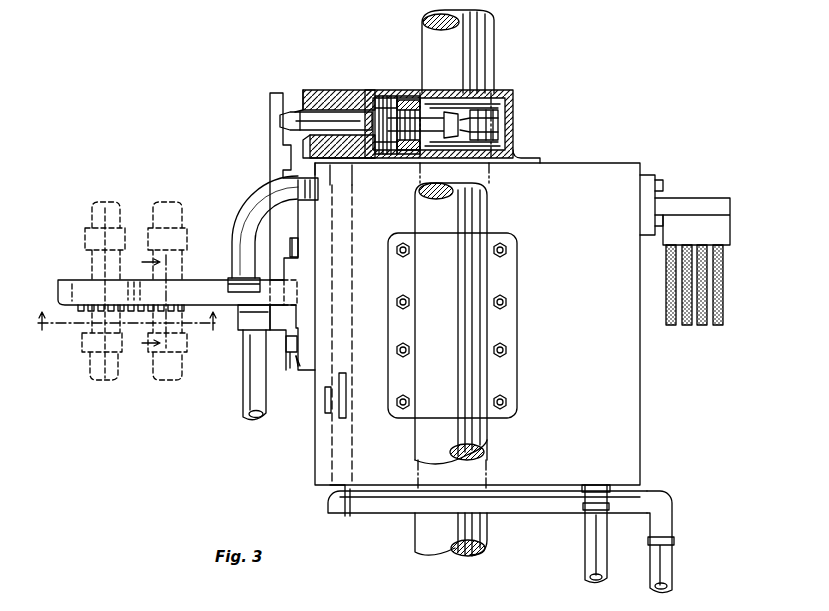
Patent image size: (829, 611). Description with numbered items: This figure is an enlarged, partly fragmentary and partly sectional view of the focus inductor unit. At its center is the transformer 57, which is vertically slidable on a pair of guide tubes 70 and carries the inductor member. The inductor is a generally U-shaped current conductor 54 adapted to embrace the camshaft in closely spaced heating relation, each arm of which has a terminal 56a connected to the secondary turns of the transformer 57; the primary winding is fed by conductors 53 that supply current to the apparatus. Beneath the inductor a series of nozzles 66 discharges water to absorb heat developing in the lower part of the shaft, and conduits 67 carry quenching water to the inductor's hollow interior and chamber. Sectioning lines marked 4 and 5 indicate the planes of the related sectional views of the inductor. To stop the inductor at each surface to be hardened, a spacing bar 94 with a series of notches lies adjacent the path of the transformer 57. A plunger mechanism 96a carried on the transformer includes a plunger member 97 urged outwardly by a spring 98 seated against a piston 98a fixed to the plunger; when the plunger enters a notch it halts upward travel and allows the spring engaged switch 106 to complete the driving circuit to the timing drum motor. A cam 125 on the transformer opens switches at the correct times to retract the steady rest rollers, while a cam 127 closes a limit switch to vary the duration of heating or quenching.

The transformer 57 is at (477, 324).
The guide tubes 70 is at (491, 16).
The spring engaged switch 106 is at (512, 130).
The plunger mechanism 96a is at (340, 92).
The plunger member 97 is at (302, 92).
The piston 98a is at (382, 94).
The spring 98 is at (408, 94).
The spacing bar 94 is at (270, 128).
The conduits 67 is at (234, 215).
The terminal 56a is at (300, 366).
The cam 127 is at (324, 402).
The cam 125 is at (348, 402).
The U-shaped current conductor 54 is at (60, 284).
The nozzles 66 is at (80, 309).
The section line 4- 4 is at (146, 303).
The section line 5- 5 is at (125, 318).
The conductors 53 is at (722, 296).